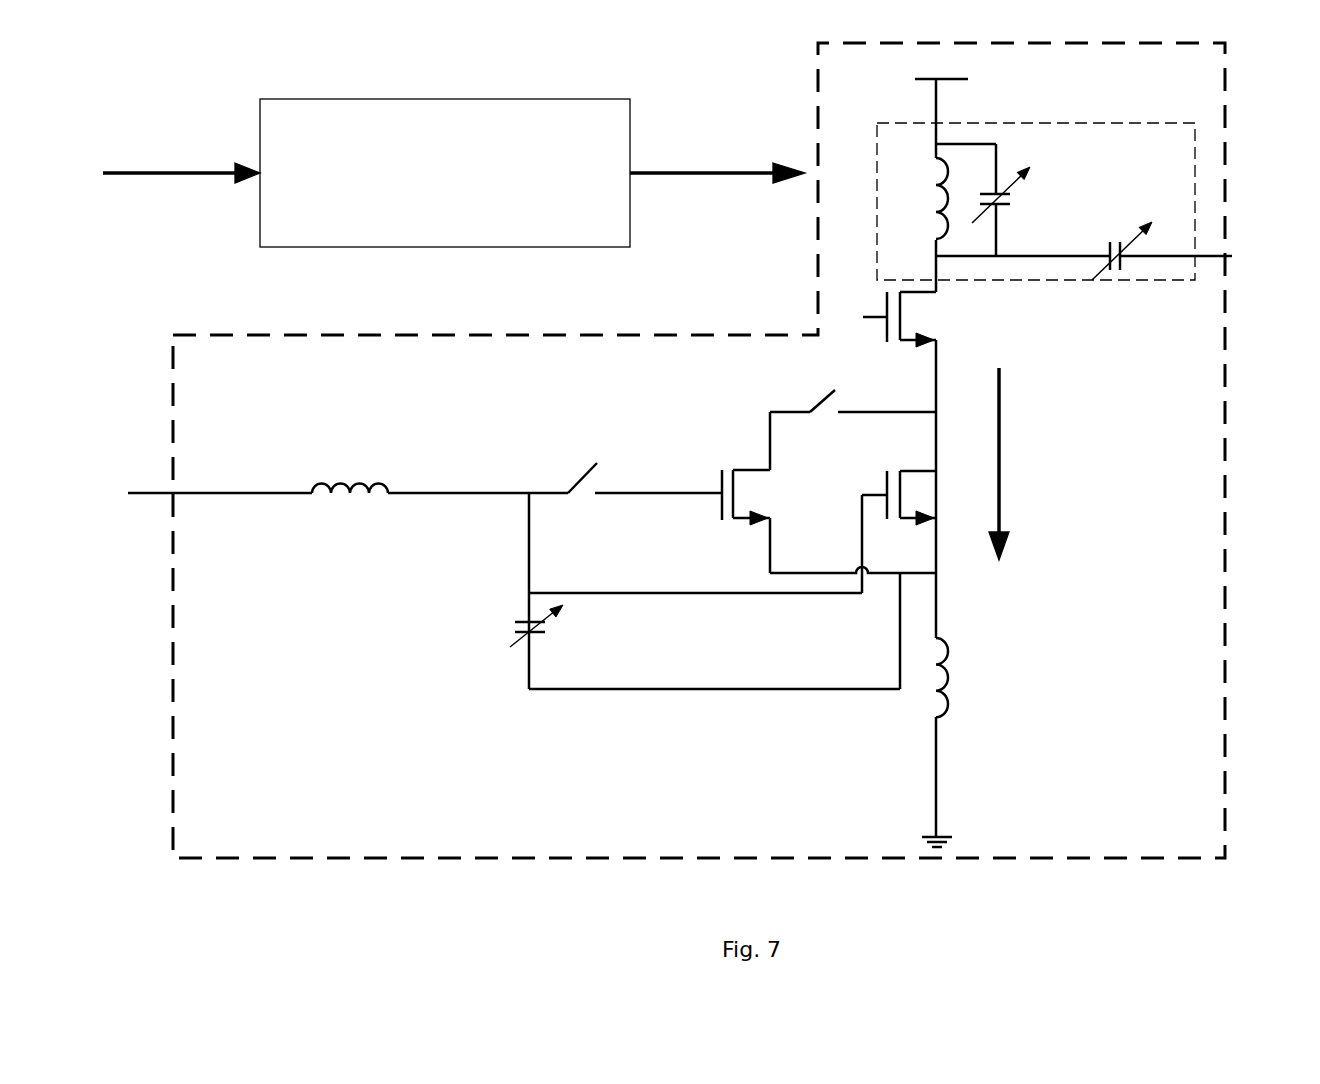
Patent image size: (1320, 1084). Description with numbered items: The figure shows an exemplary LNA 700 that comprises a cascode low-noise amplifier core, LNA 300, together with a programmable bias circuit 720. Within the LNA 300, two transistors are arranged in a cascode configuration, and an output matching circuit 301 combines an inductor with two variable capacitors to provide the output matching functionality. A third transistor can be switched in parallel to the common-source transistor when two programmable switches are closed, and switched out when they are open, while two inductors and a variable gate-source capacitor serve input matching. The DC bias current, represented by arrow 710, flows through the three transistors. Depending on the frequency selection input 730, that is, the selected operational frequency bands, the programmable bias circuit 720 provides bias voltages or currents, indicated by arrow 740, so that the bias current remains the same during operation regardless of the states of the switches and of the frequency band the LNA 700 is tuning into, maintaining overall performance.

The LNA 700 is at (323, 919).
The programmable bias circuit 720 is at (413, 98).
The frequency selection input 730 is at (180, 172).
The bias voltages or currents 740 is at (720, 171).
The LNA 300 is at (1228, 447).
The output matching circuit 301 is at (1145, 127).
The arrow representing DC bias current Idd 710 is at (1003, 397).